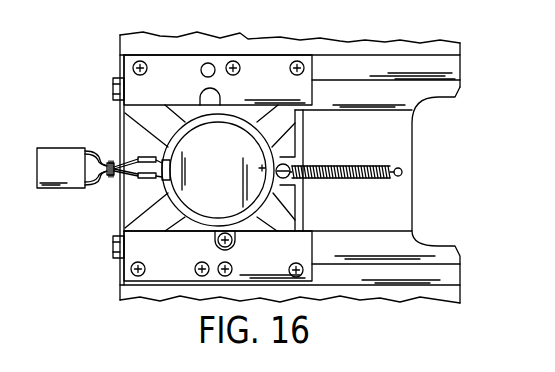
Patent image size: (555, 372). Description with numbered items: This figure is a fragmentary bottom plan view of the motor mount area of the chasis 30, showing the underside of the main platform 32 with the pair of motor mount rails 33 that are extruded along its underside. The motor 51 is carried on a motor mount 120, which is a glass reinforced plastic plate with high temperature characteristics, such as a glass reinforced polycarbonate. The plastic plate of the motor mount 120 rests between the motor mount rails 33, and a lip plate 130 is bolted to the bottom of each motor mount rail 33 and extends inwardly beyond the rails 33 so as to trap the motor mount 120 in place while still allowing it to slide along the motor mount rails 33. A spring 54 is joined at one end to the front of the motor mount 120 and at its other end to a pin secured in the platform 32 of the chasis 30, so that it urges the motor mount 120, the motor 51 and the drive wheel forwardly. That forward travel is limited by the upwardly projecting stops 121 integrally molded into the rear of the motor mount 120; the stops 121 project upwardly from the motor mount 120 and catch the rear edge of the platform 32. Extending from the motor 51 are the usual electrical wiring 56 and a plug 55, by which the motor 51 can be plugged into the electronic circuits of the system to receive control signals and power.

The chasis 30 is at (348, 42).
The main platform 32 is at (442, 52).
The motor mount rails 33 is at (415, 271).
The motor 51 is at (222, 171).
The spring 54 is at (318, 164).
The plug 55 is at (60, 148).
The electrical wiring 56 is at (100, 157).
The motor mount 120 is at (283, 205).
The stops 121 is at (118, 78).
The lip plate 130 is at (251, 75).